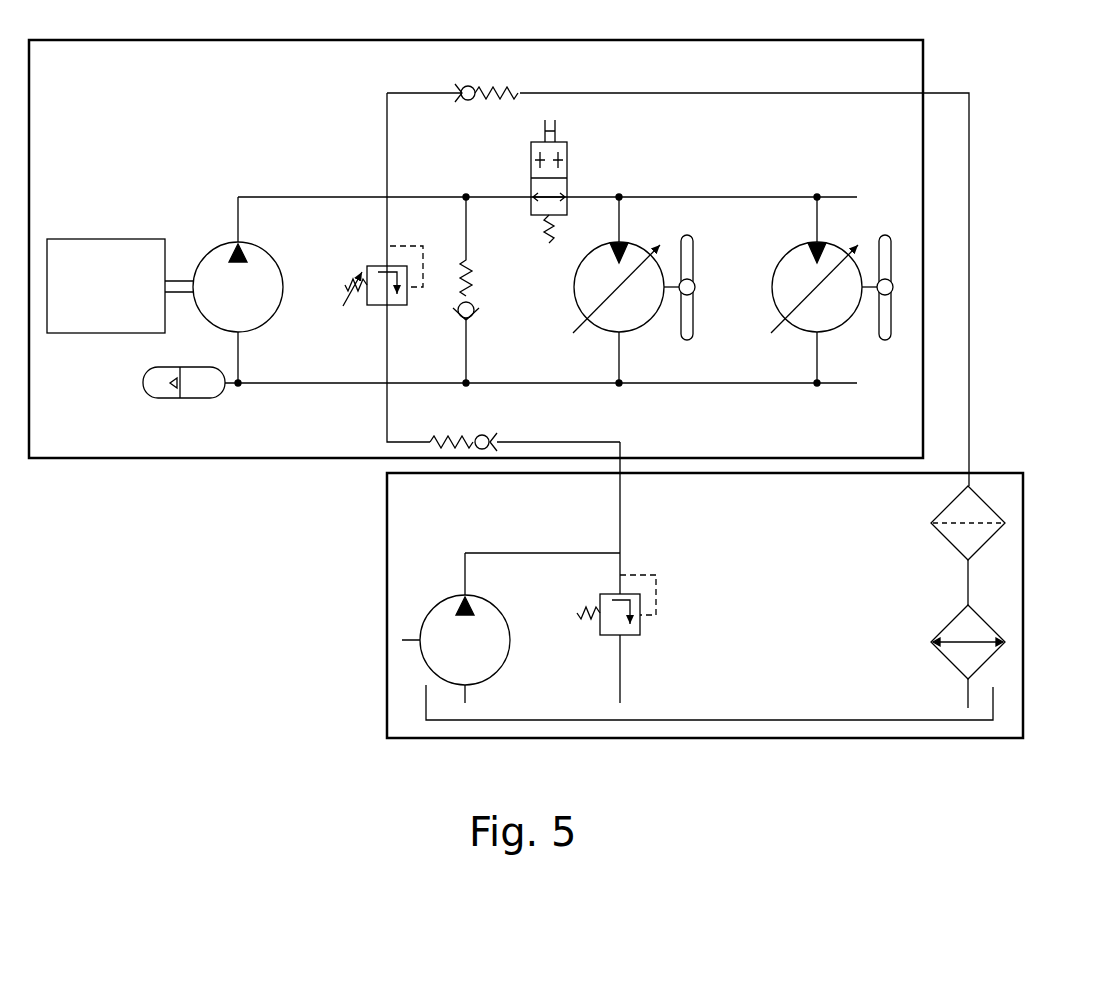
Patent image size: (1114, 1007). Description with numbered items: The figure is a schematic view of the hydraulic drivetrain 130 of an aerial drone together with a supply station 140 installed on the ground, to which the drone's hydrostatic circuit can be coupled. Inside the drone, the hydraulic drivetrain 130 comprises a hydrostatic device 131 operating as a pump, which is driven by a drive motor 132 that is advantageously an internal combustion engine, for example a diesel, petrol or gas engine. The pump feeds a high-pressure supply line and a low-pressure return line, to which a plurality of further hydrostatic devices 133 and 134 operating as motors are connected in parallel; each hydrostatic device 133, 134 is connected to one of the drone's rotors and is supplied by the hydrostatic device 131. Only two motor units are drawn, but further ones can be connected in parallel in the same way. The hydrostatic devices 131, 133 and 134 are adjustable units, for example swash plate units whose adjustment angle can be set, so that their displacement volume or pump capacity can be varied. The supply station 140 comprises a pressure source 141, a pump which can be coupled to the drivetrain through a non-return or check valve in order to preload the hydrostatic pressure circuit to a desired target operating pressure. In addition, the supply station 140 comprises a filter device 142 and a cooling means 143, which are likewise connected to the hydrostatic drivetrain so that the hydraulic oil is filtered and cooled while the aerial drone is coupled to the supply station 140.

The hydraulic drivetrain 130 is at (499, 282).
The hydrostatic device operating as a pump 131 is at (221, 276).
The drive motor 132 is at (107, 239).
The hydrostatic device operating as a motor 133 is at (640, 305).
The hydrostatic device operating as a motor 134 is at (836, 305).
The supply station 140 is at (750, 621).
The pressure source 141 is at (497, 652).
The filter device 142 is at (1003, 515).
The cooling means 143 is at (1000, 656).